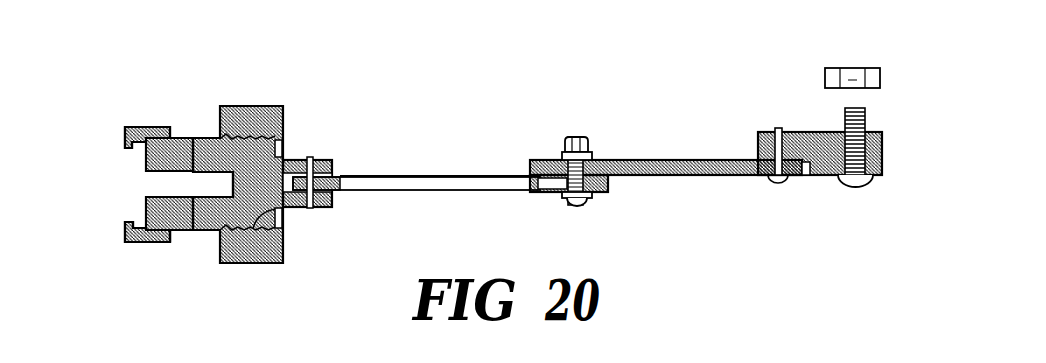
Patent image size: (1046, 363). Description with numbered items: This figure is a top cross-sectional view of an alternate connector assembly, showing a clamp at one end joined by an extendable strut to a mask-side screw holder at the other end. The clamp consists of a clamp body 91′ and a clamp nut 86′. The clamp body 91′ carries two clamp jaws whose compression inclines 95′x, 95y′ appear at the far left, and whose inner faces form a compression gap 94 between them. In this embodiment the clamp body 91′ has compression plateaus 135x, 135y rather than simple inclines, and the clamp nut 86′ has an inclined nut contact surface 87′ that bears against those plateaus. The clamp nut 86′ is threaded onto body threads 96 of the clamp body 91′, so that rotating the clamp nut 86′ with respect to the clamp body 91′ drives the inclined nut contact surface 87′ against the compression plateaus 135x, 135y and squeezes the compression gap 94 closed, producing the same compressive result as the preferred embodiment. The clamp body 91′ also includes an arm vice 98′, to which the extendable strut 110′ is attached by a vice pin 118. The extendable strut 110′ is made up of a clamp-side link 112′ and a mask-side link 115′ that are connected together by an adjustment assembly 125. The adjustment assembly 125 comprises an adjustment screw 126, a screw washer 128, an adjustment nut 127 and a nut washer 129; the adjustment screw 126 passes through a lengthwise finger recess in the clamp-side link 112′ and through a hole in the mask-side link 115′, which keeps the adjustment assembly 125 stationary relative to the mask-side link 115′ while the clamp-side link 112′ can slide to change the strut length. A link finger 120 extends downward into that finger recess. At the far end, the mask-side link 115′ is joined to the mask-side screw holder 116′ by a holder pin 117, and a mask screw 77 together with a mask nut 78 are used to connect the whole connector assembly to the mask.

The compression plateau 135x is at (182, 137).
The compression plateau 135y is at (193, 231).
The compression incline 95′x is at (132, 127).
The compression incline 95y′ is at (130, 242).
The clamp body 91′ is at (162, 243).
The clamp nut 86′ is at (273, 105).
The inclined nut contact surface 87′ is at (222, 182).
The compression gap 94 is at (170, 183).
The body threads 96 is at (285, 213).
The arm vice 98′ is at (297, 160).
The vice pin 118 is at (312, 158).
The clamp-side link 112′ is at (367, 174).
The extendable strut 110′ is at (458, 172).
The mask-side link 115′ is at (695, 162).
The link finger 120 is at (533, 188).
The adjustment assembly 125 is at (598, 170).
The adjustment screw 126 is at (569, 201).
The adjustment nut 127 is at (586, 144).
The screw washer 128 is at (593, 195).
The nut washer 129 is at (595, 155).
The mask-side screw holder 116′ is at (881, 167).
The holder pin 117 is at (778, 128).
The mask screw 77 is at (861, 128).
The mask nut 78 is at (855, 68).